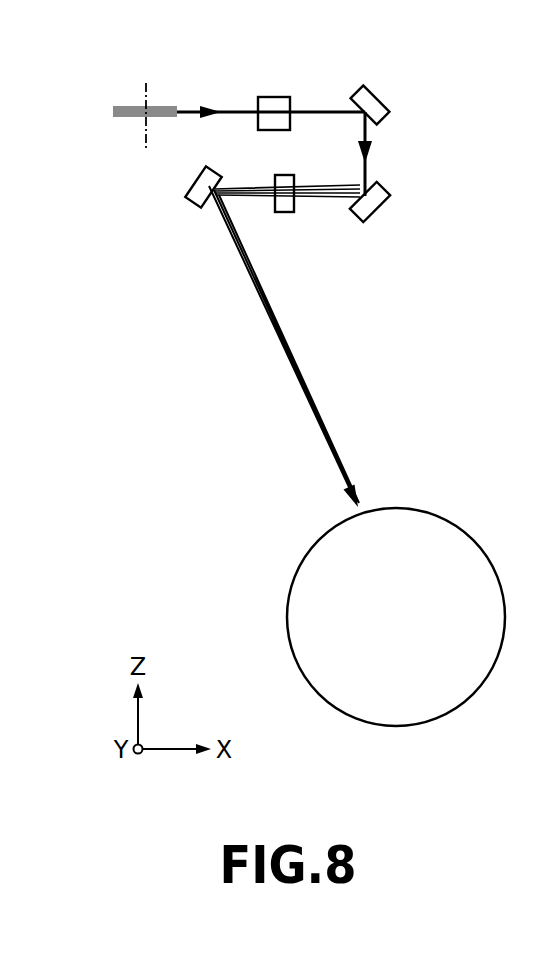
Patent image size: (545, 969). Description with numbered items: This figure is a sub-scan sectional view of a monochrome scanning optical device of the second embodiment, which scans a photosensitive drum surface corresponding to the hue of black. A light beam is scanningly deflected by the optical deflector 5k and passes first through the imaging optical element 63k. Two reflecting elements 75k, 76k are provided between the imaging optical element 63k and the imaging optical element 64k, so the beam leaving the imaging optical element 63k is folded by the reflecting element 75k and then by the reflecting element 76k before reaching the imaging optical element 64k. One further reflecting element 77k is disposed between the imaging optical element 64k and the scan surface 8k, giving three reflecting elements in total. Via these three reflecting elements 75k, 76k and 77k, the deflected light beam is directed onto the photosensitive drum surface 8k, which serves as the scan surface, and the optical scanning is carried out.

The optical deflector 5k is at (239, 131).
The imaging optical element 63k is at (273, 103).
The imaging optical element 64k is at (287, 206).
The reflecting element 75k is at (370, 104).
The reflecting element 76k is at (370, 204).
The reflecting element 77k is at (200, 185).
The photosensitive drum surface 8k is at (355, 537).